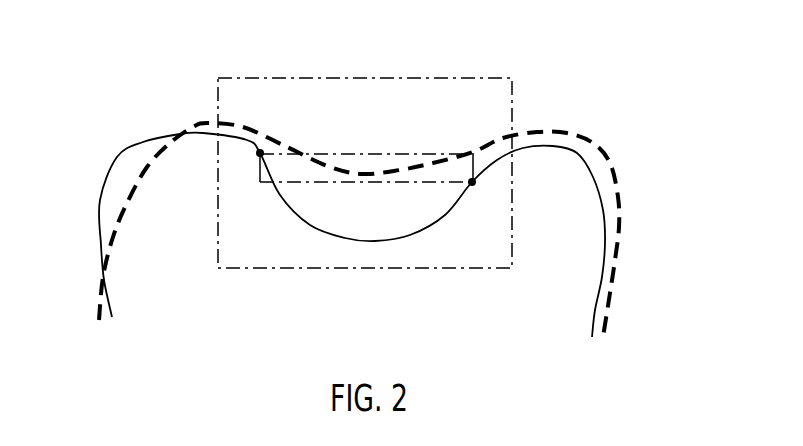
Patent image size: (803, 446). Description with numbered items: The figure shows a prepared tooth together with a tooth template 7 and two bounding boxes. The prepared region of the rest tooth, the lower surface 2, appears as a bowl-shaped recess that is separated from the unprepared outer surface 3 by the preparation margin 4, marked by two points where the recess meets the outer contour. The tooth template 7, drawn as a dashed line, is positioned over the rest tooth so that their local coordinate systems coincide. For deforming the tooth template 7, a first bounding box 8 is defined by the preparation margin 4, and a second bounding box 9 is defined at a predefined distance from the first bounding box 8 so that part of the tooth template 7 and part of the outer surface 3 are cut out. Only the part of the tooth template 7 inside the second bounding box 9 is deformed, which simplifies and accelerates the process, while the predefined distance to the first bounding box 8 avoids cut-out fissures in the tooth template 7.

The lower surface 2 is at (381, 243).
The outer surface 3 is at (113, 313).
The preparation margin 4 is at (257, 157).
The tooth template 7 is at (621, 207).
The first bounding box 8 is at (432, 154).
The second bounding box 9 is at (495, 78).